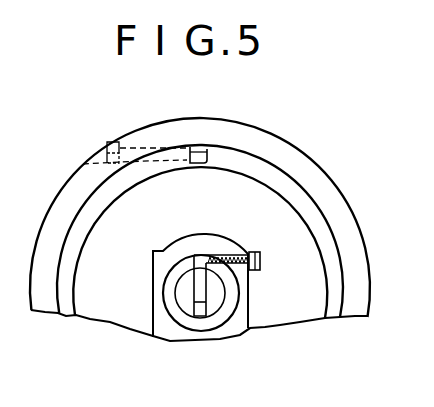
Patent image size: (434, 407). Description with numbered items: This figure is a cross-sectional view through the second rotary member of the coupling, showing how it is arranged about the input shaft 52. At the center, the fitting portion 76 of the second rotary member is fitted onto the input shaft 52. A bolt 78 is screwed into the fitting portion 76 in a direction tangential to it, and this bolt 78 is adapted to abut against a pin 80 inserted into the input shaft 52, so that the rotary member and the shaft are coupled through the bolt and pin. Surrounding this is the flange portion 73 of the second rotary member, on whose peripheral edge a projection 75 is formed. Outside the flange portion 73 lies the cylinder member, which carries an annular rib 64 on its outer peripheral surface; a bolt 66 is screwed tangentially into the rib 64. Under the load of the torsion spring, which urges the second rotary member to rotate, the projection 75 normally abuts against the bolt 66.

The input shaft 52 is at (217, 300).
The annular rib 64 is at (330, 197).
The bolt 66 is at (133, 147).
The flange portion 73 is at (270, 197).
The projection 75 is at (200, 150).
The fitting portion 76 is at (163, 250).
The bolt 78 is at (234, 253).
The pin 80 is at (193, 297).